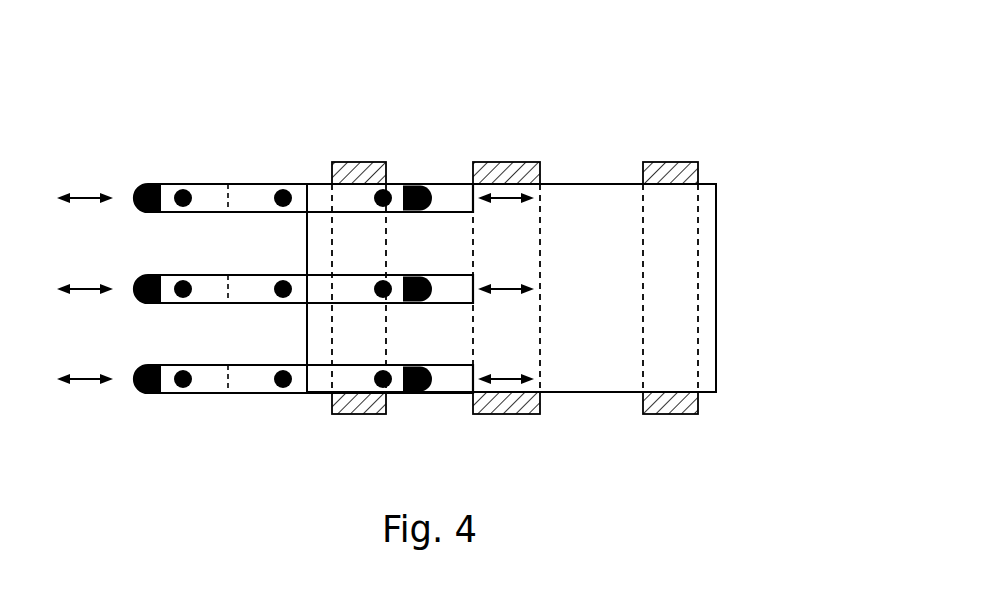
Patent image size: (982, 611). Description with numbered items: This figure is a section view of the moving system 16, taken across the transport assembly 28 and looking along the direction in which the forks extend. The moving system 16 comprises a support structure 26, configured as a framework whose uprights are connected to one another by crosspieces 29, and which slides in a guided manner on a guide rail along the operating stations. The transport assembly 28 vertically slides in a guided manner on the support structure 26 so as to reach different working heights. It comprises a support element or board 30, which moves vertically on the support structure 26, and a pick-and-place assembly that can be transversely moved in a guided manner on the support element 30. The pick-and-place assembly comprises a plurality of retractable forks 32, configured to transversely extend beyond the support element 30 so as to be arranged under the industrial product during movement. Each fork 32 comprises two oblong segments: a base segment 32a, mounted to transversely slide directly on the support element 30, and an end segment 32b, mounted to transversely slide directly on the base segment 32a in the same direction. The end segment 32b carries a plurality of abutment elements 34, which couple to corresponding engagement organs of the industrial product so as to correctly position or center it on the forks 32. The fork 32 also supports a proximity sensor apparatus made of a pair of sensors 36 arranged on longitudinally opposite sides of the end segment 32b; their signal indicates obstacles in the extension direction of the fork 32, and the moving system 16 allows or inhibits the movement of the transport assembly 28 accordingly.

The moving system 16 is at (756, 142).
The support structure 26 is at (686, 148).
The transport assembly 28 is at (313, 401).
The crosspieces 29 is at (590, 184).
The support element 30 is at (717, 240).
The retractable fork 32 is at (250, 176).
The base segment 32a is at (450, 194).
The end segment 32b is at (212, 205).
The abutment element 34 is at (181, 188).
The proximity sensor 36 is at (150, 394).